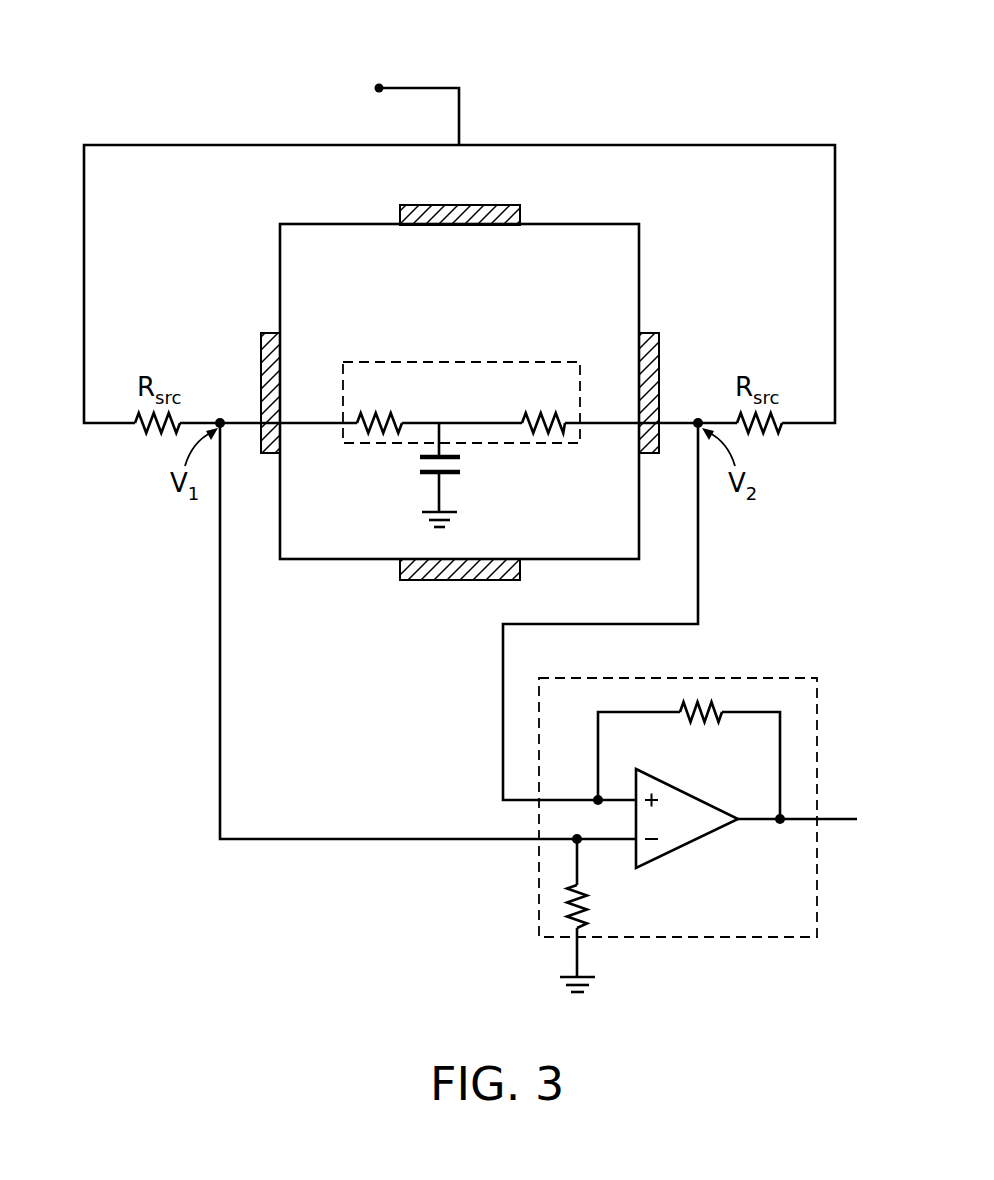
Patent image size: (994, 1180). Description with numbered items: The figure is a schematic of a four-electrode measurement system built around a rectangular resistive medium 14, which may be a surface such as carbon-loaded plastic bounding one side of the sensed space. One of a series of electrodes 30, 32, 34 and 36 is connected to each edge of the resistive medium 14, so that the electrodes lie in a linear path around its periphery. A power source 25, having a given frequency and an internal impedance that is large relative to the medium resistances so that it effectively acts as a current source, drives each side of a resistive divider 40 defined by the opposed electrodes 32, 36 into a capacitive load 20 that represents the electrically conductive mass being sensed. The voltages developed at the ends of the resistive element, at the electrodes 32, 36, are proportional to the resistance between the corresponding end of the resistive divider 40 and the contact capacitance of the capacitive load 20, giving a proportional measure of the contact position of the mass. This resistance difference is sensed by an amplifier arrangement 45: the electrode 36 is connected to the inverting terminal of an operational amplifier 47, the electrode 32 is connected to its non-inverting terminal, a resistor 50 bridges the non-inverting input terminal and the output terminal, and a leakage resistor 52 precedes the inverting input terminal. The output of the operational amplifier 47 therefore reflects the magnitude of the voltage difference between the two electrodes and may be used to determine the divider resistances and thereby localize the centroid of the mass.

The resistive medium 14 is at (567, 238).
The capacitive load 20 is at (456, 473).
The power source 25 is at (420, 52).
The electrode 30 is at (457, 205).
The electrode 32 is at (660, 365).
The electrode 34 is at (460, 583).
The electrode 36 is at (261, 365).
The resistive divider 40 is at (455, 362).
The amplifier arrangement 45 is at (690, 813).
The operational amplifier 47 is at (677, 853).
The resistor 50 is at (704, 727).
The leakage resistor 52 is at (555, 906).